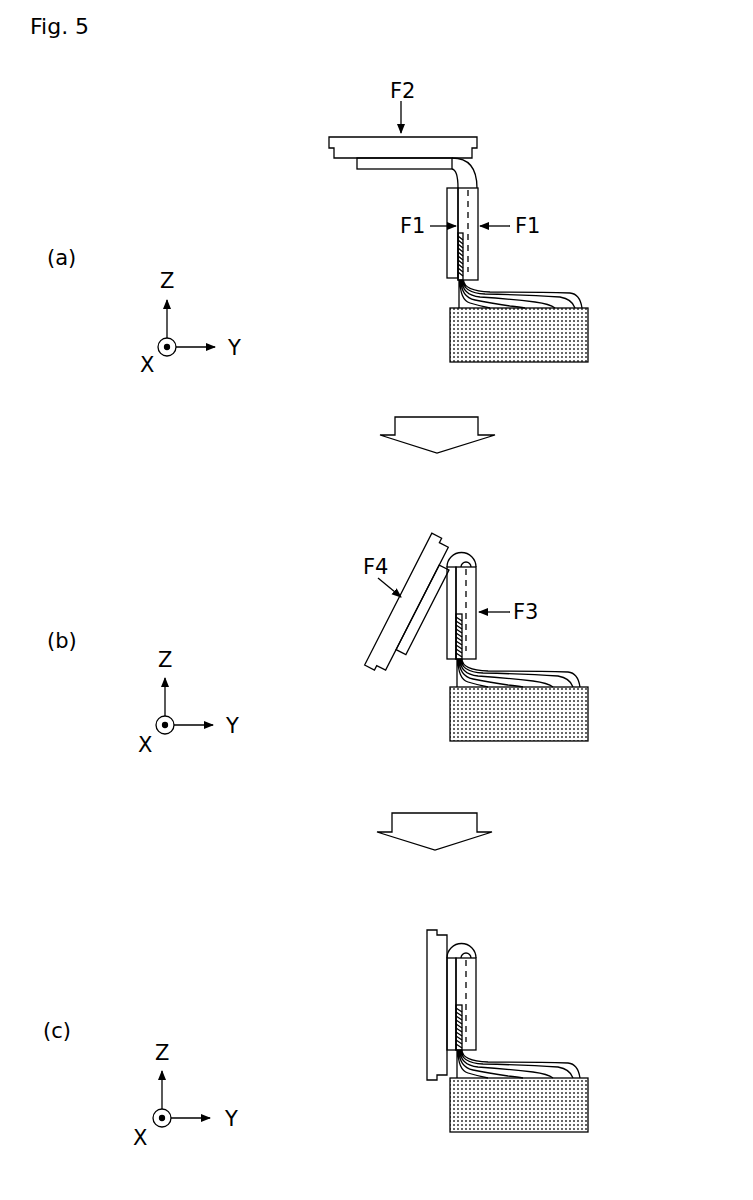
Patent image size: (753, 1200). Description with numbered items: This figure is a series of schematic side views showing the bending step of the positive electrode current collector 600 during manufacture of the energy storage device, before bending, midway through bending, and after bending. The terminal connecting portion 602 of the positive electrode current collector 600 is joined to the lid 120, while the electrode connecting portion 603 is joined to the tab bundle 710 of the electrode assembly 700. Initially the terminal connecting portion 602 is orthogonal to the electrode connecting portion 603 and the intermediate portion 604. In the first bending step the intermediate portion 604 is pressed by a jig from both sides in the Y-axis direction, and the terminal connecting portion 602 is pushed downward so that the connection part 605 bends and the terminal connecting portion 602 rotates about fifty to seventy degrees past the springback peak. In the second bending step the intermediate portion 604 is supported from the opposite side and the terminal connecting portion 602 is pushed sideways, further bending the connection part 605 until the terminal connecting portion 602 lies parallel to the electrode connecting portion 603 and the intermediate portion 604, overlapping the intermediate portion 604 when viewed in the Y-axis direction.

The lid 120 is at (329, 146).
The terminal connecting portion 602 is at (357, 165).
The electrode connecting portion 603 is at (447, 196).
The intermediate portion 604 is at (478, 197).
The connection part 605 is at (473, 168).
The positive electrode current collector 600 is at (499, 178).
The tab bundle 710 is at (464, 250).
The electrode assembly 700 is at (588, 340).